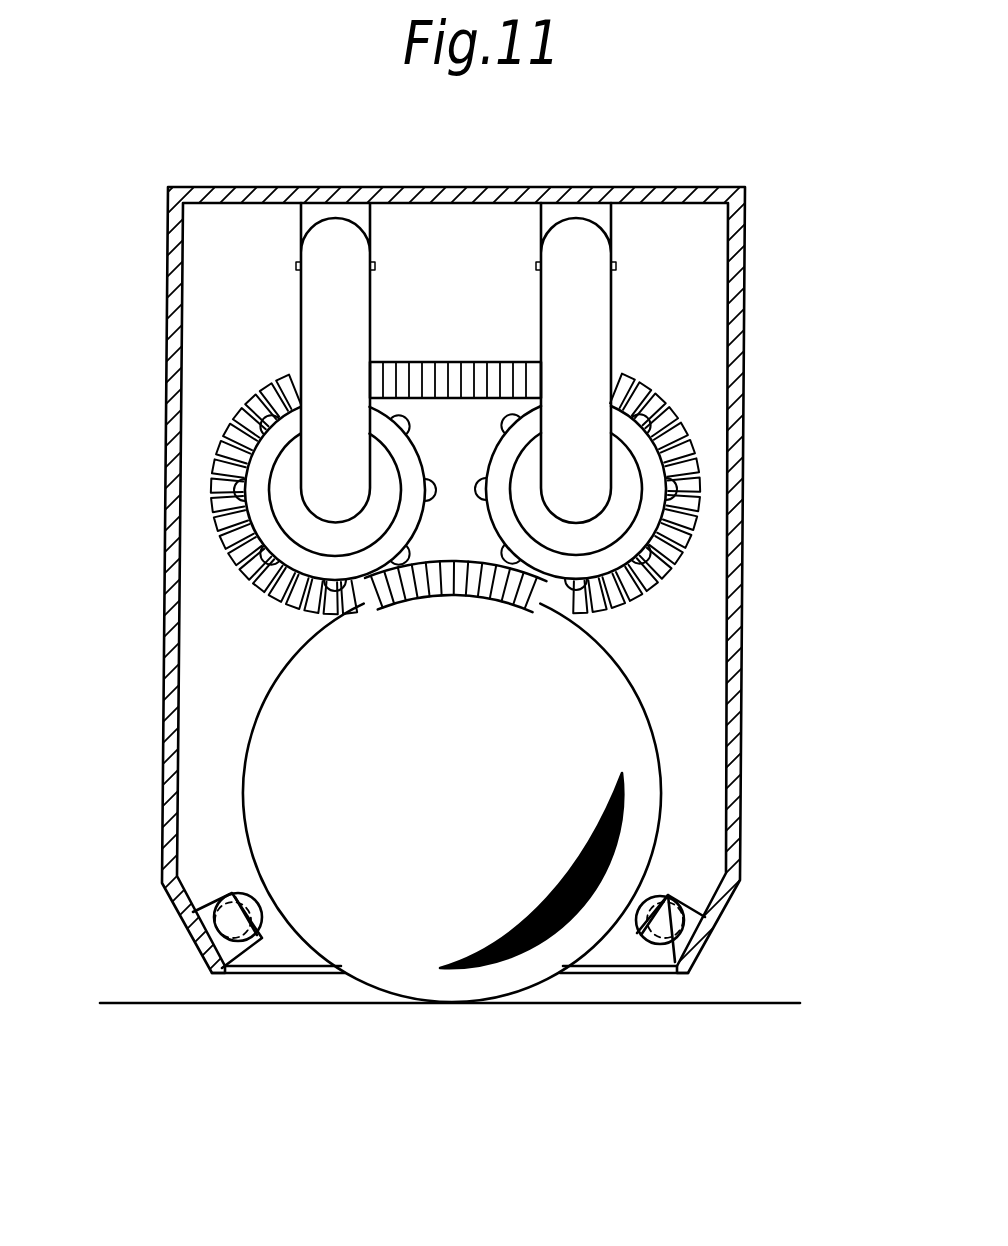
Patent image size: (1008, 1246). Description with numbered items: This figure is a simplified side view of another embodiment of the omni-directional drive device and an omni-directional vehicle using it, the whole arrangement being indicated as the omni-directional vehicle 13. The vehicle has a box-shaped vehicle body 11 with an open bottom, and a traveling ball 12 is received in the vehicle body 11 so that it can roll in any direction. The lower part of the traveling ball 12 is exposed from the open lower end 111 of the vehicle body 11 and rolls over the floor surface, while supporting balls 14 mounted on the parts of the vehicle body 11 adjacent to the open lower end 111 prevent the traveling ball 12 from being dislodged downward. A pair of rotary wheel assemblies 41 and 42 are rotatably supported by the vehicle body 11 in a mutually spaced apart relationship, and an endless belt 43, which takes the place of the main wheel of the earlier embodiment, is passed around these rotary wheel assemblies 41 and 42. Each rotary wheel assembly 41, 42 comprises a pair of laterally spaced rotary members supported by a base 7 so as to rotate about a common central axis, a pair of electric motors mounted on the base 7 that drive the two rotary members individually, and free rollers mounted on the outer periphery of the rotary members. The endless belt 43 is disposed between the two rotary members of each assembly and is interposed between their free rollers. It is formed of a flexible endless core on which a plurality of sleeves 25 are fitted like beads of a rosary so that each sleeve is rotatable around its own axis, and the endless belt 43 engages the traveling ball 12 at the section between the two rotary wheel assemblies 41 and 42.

The base 7 is at (362, 318).
The sleeves 25 is at (663, 400).
The rotary wheel assembly 42 is at (262, 452).
The rotary wheel assembly 41 is at (655, 465).
The endless belt 43 is at (660, 573).
The vehicle body 11 is at (738, 650).
The traveling ball 12 is at (612, 705).
The ball drive unit 13 is at (765, 700).
The supporting balls 14 is at (257, 912).
The open lower end 111 is at (612, 965).